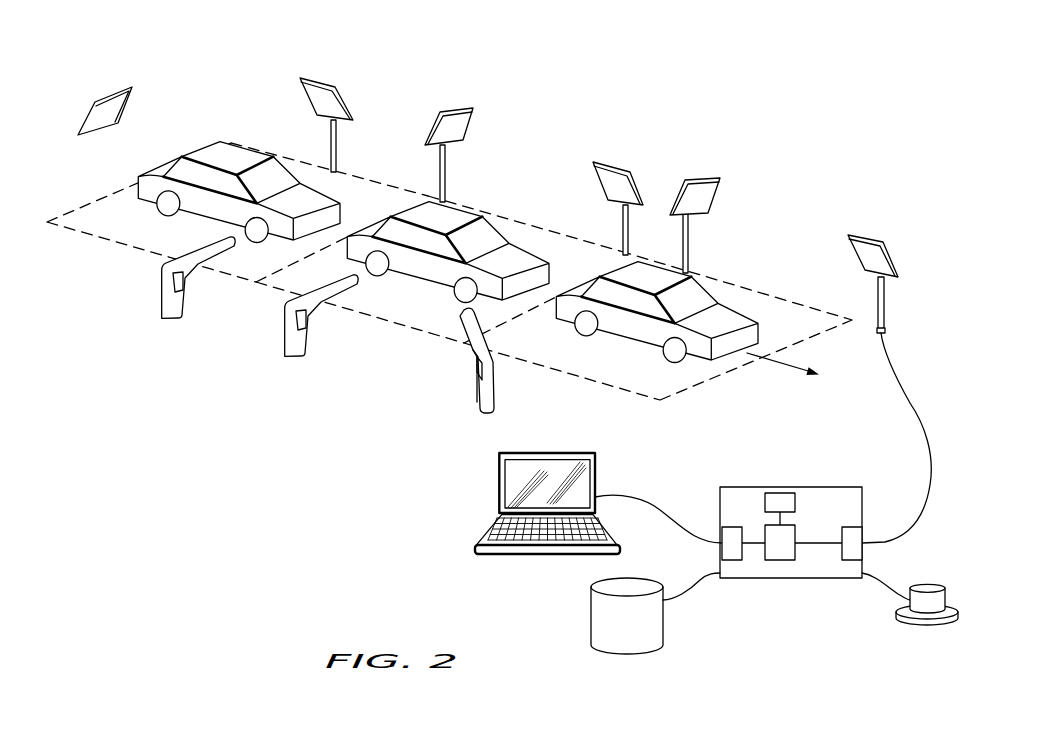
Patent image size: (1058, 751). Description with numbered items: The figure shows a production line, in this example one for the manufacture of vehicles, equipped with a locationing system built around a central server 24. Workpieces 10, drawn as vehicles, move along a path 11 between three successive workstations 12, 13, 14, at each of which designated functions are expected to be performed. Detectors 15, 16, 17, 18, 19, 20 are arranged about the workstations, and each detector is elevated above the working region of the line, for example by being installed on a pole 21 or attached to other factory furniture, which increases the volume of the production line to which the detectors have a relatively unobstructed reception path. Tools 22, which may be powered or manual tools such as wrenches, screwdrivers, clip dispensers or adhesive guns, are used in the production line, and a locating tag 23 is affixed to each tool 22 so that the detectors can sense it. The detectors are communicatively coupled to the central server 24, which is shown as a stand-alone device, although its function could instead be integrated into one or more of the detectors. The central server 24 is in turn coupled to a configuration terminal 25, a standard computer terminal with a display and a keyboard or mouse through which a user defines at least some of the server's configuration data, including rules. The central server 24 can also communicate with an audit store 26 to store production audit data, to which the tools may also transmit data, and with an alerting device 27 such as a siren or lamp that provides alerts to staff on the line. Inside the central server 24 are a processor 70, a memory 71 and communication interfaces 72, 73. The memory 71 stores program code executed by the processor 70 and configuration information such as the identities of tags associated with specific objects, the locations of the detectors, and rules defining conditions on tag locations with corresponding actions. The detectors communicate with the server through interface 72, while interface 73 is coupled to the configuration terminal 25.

The workpiece 10 is at (232, 150).
The path 11 is at (783, 367).
The workstation 12 is at (94, 237).
The workstation 13 is at (406, 329).
The workstation 14 is at (612, 383).
The detector 15 is at (110, 98).
The detector 16 is at (318, 78).
The detector 17 is at (450, 108).
The detector 18 is at (618, 162).
The detector 19 is at (700, 178).
The detector 20 is at (872, 235).
The pole 21 is at (338, 147).
The tool 22 is at (158, 307).
The locating tag 23 is at (183, 282).
The central server 24 is at (796, 537).
The configuration terminal 25 is at (492, 483).
The audit store 26 is at (600, 612).
The alerting device 27 is at (930, 586).
The processor 70 is at (775, 560).
The memory 71 is at (778, 493).
The communication interface 72 is at (855, 527).
The communication interface 73 is at (727, 527).